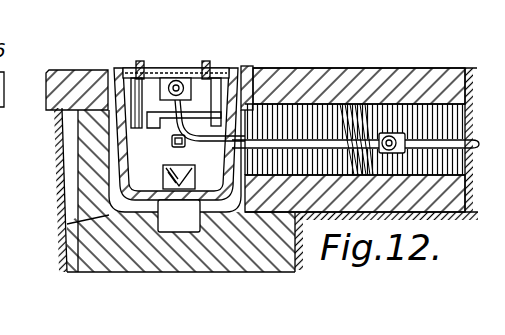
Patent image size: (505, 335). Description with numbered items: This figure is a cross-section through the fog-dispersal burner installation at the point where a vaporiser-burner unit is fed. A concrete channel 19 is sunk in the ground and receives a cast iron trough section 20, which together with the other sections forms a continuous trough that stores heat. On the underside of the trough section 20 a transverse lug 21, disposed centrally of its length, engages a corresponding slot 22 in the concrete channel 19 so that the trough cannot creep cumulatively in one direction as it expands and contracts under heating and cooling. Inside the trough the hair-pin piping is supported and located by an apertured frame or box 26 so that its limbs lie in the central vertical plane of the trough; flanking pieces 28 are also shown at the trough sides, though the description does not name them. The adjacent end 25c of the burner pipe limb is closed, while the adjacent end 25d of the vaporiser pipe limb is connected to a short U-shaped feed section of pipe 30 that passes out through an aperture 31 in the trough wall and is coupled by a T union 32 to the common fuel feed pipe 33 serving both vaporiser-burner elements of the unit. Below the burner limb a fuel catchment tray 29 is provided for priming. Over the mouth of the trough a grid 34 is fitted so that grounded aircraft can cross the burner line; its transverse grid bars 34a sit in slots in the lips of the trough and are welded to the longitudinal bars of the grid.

The concrete channel 19 is at (129, 268).
The cast iron trough section 20 is at (63, 187).
The transverse lug 21 is at (212, 208).
The slot 22 is at (68, 219).
The adjacent end of burner pipe limb 25c is at (247, 84).
The adjacent end of vaporiser pipe limb 25d is at (186, 66).
The frame or box 26 is at (161, 141).
The block 28 is at (111, 69).
The fuel catchment tray 29 is at (168, 169).
The U-shaped feed section of pipe 30 is at (286, 110).
The aperture 31 is at (233, 155).
The T union 32 is at (388, 136).
The common fuel feed pipe 33 is at (474, 122).
The grid 34 is at (183, 64).
The transverse grid bar 34a is at (139, 65).